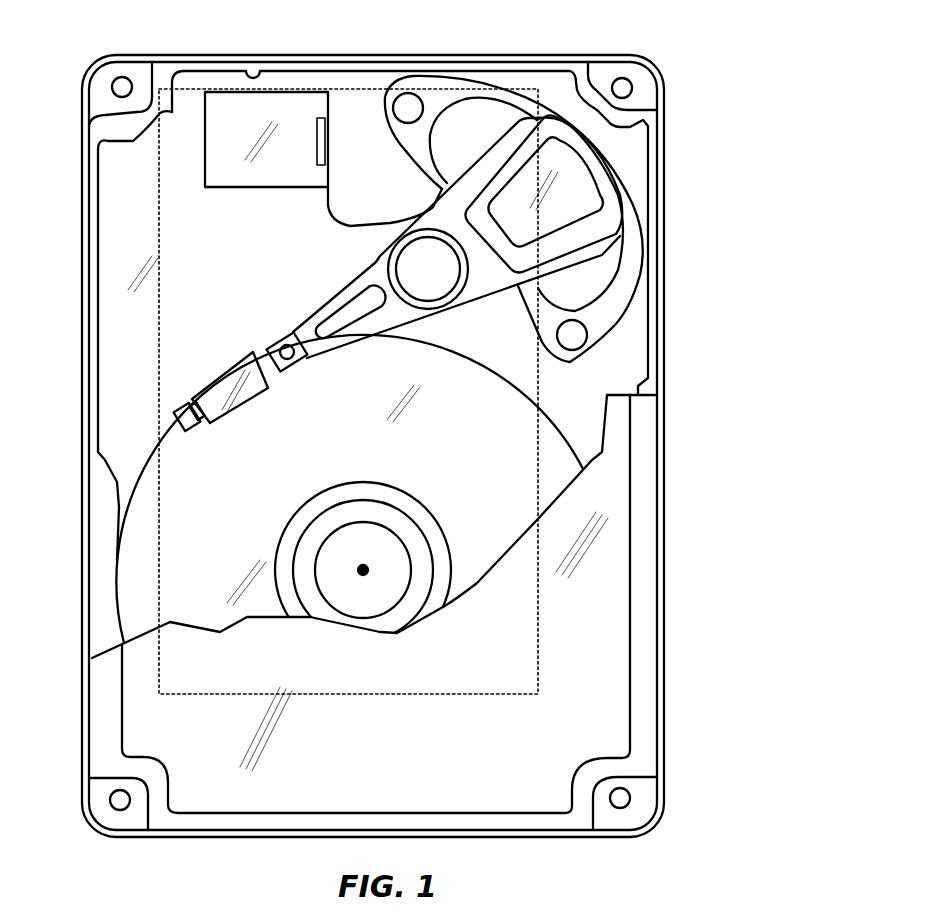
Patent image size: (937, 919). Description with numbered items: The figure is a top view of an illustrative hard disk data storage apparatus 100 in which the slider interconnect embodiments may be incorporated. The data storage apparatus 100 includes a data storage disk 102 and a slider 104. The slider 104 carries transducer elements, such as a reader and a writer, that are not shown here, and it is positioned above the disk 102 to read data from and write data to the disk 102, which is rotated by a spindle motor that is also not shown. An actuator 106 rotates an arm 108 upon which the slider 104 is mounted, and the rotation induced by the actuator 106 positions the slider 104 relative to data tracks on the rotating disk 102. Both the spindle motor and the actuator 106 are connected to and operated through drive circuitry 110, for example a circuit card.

The hard disk data storage apparatus 100 is at (705, 52).
The data storage disk 102 is at (143, 568).
The slider 104 is at (177, 410).
The actuator 106 is at (622, 256).
The arm 108 is at (357, 285).
The drive circuitry 110 is at (540, 690).